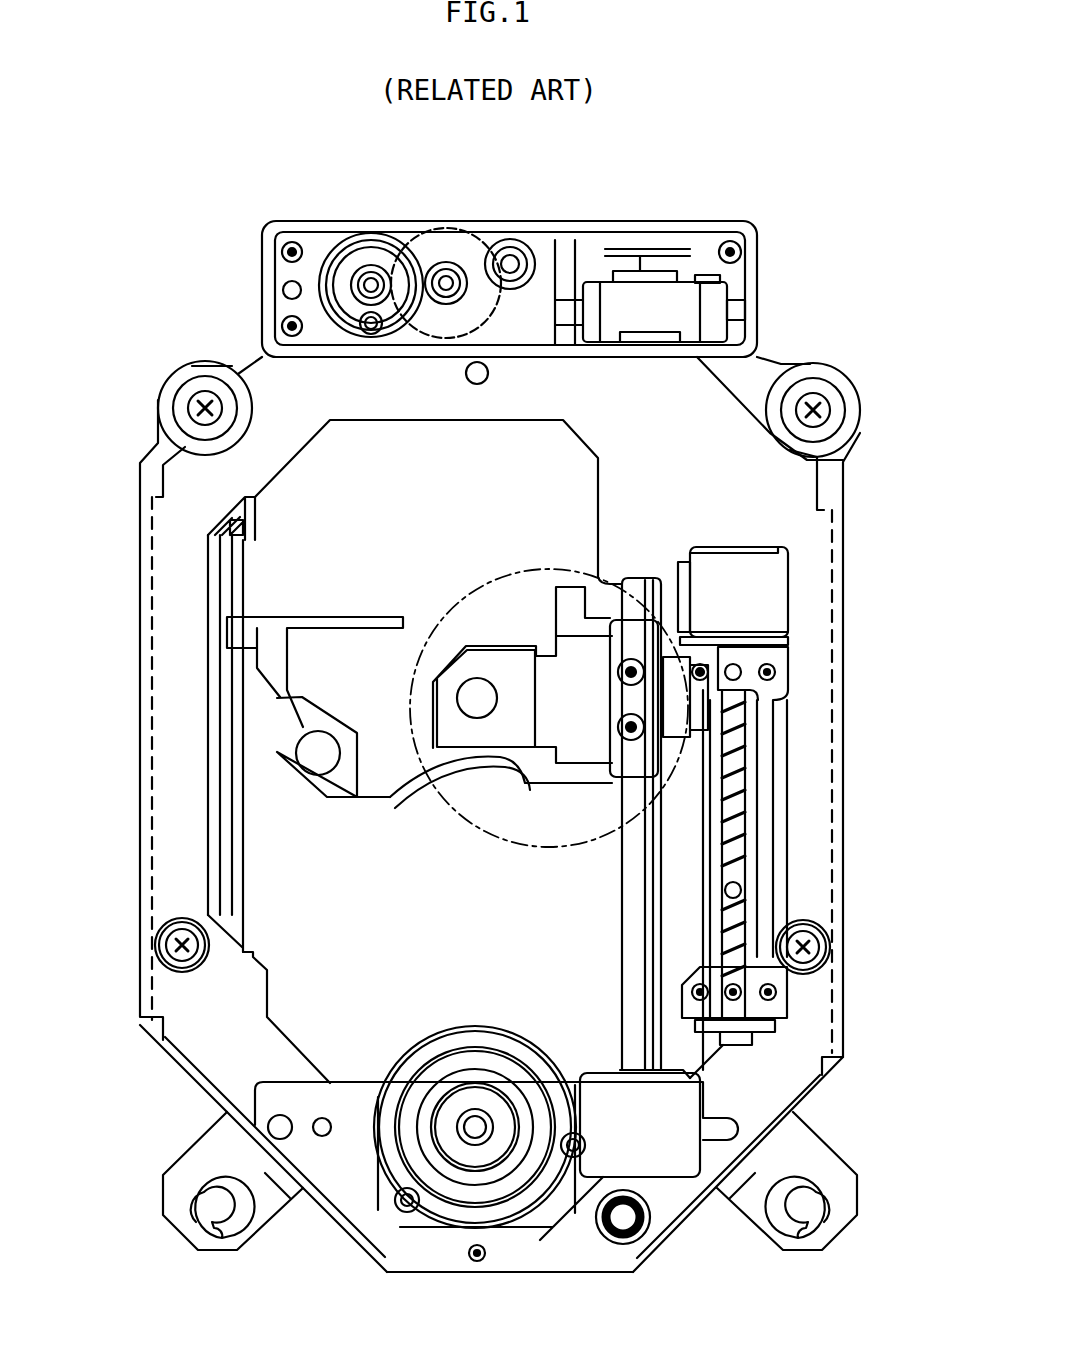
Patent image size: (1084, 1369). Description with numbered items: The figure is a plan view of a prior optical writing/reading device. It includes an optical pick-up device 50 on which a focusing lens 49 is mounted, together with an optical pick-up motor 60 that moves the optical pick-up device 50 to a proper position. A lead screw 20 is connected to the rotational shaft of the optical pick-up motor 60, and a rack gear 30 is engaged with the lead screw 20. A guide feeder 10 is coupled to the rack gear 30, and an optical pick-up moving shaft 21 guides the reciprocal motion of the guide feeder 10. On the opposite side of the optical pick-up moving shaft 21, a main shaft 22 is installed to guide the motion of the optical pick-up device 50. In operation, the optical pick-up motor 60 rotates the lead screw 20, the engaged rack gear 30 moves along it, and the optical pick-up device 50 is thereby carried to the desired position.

The guide feeder 10 is at (693, 660).
The lead screw 20 is at (733, 832).
The optical pick-up moving shaft 21 is at (650, 915).
The main shaft 22 is at (227, 720).
The rack gear 30 is at (740, 682).
The focusing lens 49 is at (477, 698).
The optical pick-up device 50 is at (407, 763).
The optical pick-up motor 60 is at (747, 575).